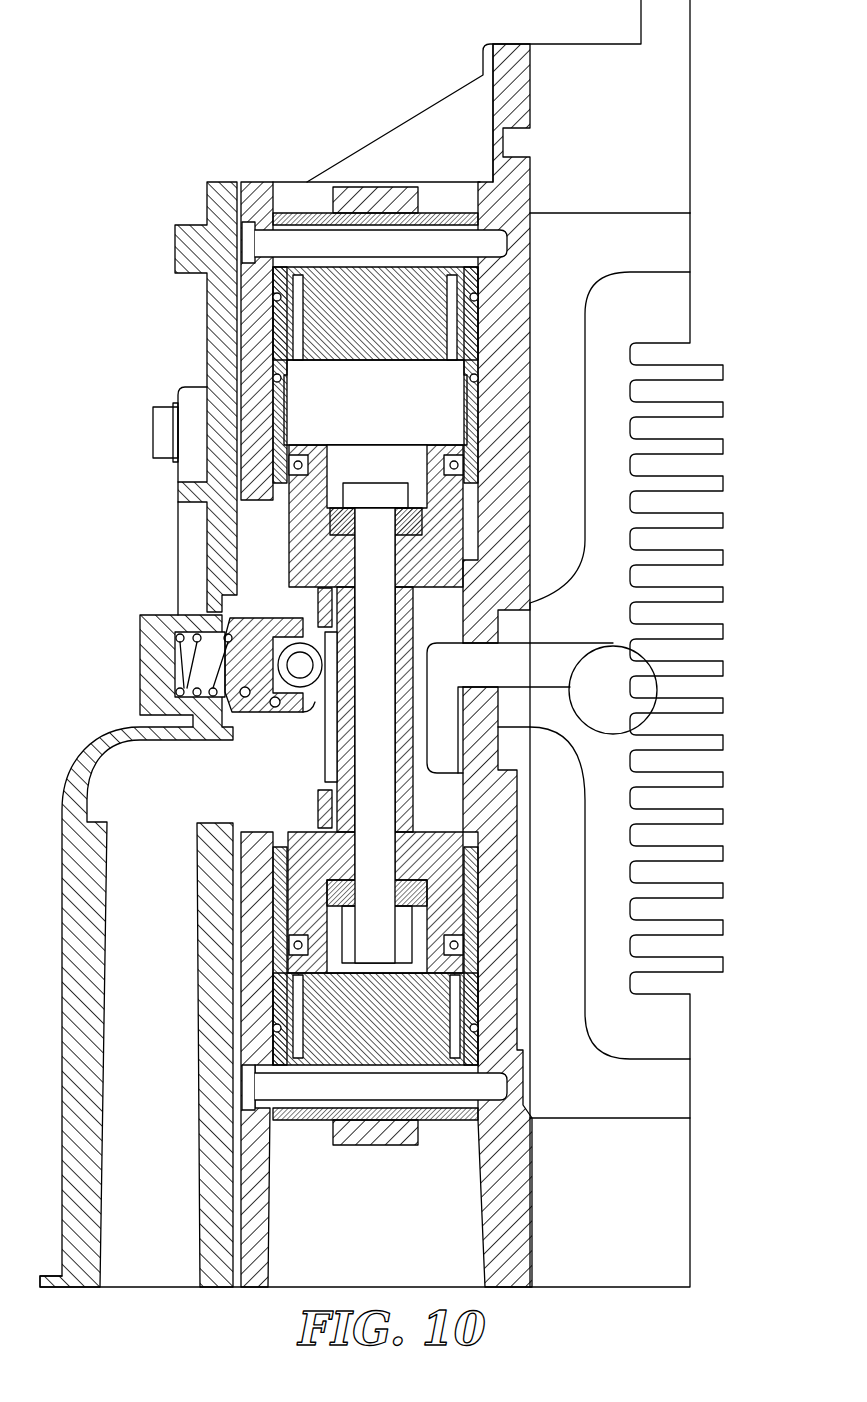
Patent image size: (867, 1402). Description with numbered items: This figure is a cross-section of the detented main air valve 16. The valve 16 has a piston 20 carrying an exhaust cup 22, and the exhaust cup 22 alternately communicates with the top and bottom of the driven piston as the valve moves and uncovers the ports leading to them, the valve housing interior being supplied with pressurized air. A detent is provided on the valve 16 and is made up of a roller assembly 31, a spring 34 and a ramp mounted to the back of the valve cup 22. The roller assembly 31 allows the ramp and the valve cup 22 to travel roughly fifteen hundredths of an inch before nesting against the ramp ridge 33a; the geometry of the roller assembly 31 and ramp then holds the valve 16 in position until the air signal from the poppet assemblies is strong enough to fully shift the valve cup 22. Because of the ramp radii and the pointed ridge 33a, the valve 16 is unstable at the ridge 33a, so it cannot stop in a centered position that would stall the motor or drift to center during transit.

The main air valve 16 is at (104, 183).
The piston 20 is at (335, 551).
The exhaust cup 22 is at (438, 797).
The roller assembly 31 is at (252, 650).
The ramp ridge 33a is at (317, 705).
The spring 34 is at (192, 665).